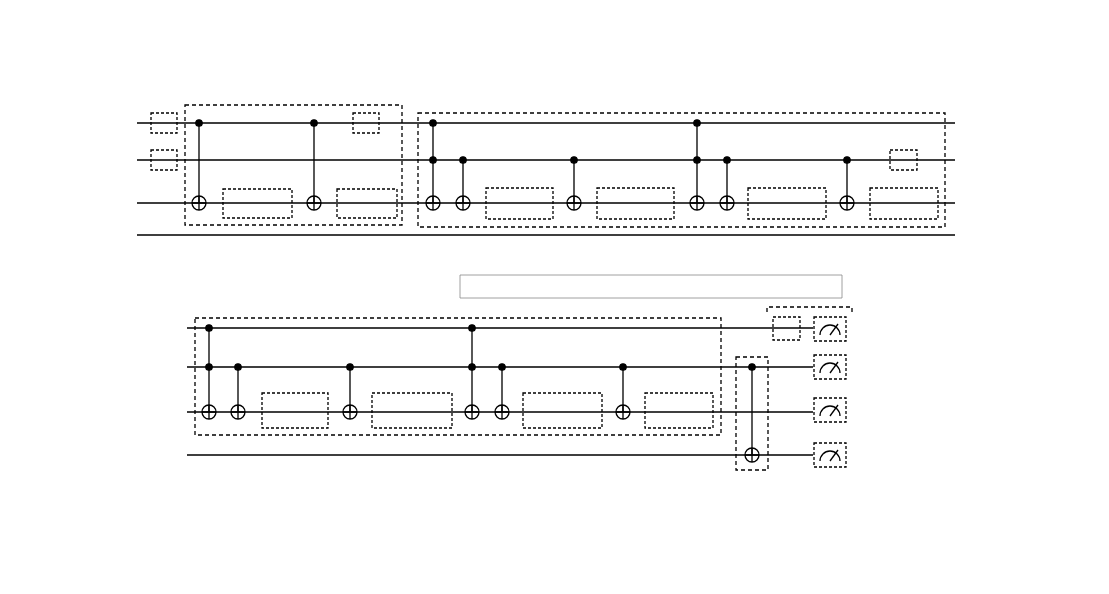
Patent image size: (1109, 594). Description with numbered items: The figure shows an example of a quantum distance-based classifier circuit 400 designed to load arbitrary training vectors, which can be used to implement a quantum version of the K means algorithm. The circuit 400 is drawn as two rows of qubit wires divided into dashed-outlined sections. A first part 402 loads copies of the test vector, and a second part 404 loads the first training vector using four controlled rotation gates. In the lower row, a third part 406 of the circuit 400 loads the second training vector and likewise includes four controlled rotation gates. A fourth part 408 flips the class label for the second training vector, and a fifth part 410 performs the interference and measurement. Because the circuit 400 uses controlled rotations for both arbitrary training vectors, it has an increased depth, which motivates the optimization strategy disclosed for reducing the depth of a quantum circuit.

The quantum distance-based classifier circuit 400 is at (568, 519).
The first part 402 is at (300, 104).
The second part 404 is at (698, 112).
The third part 406 is at (425, 318).
The fourth part 408 is at (757, 357).
The fifth part 410 is at (808, 307).